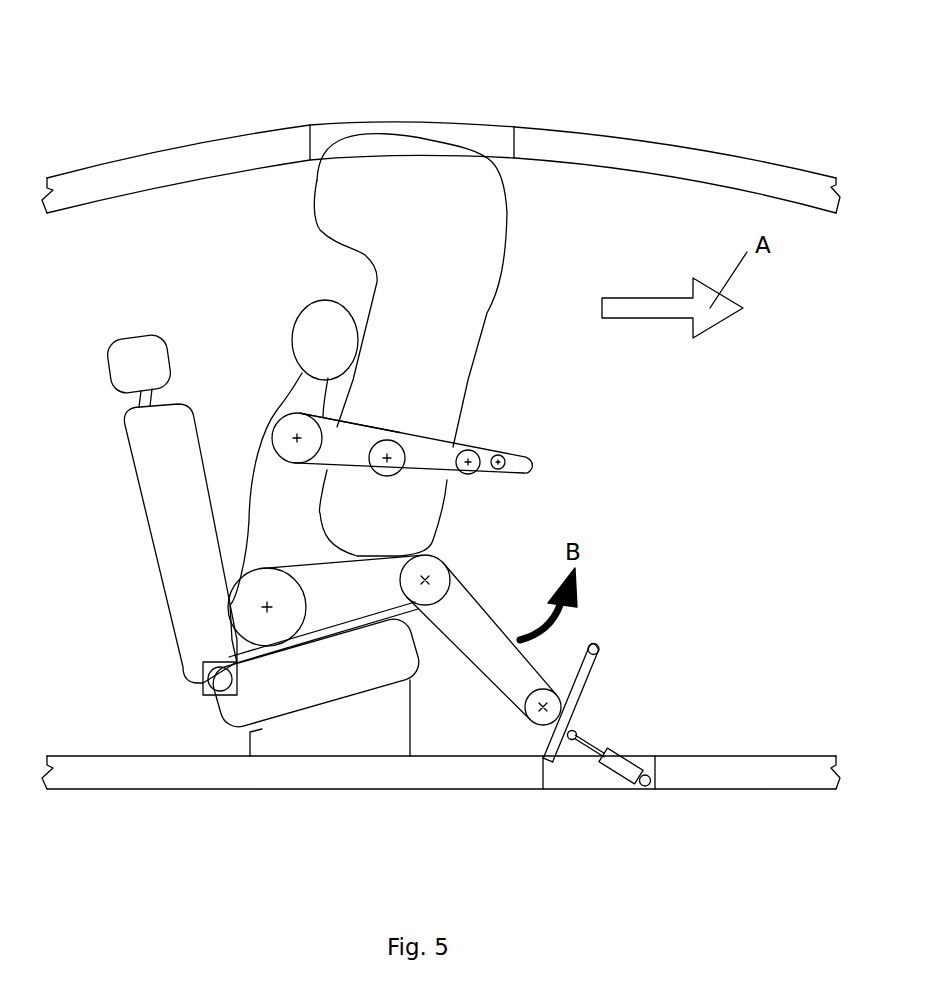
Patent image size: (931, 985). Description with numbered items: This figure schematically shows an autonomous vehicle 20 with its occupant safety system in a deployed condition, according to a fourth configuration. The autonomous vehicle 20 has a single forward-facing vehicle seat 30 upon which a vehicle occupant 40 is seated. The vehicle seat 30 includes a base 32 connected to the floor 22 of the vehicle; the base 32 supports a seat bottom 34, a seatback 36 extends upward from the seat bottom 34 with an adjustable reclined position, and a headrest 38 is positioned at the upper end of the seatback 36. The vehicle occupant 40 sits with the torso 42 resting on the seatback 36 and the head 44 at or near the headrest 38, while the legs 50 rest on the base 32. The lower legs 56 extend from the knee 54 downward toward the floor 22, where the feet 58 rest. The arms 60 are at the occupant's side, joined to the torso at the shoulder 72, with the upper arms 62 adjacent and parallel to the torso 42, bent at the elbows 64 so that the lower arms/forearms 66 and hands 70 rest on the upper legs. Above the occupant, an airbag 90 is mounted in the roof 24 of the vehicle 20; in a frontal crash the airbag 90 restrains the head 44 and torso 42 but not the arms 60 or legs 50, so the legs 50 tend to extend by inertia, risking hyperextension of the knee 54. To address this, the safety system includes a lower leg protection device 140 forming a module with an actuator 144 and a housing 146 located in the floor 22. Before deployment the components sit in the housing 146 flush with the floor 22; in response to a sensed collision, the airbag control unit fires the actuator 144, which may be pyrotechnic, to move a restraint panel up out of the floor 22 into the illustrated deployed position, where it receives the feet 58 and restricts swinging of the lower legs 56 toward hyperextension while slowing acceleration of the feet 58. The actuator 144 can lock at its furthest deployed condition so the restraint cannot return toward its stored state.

The autonomous vehicle 20 is at (145, 112).
The floor 22 is at (425, 790).
The roof 24 is at (558, 148).
The vehicle seat 30 is at (156, 720).
The base 32 is at (365, 738).
The seat bottom 34 is at (323, 697).
The seatback 36 is at (187, 555).
The headrest 38 is at (122, 373).
The vehicle occupant 40 is at (230, 384).
The torso 42 is at (268, 483).
The head 44 is at (307, 333).
The legs 50 is at (340, 618).
The knee 54 is at (432, 570).
The lower legs 56 is at (473, 630).
The feet 58 is at (572, 673).
The arms 60 is at (337, 443).
The upper arms 62 is at (350, 460).
The elbows 64 is at (387, 477).
The lower arms/forearms 66 is at (430, 467).
The hands 70 is at (508, 462).
The shoulder joint 72 is at (292, 425).
The airbag 90 is at (465, 262).
The lower leg protection device 140 is at (680, 665).
The actuator 144 is at (597, 683).
The housing 146 is at (592, 812).